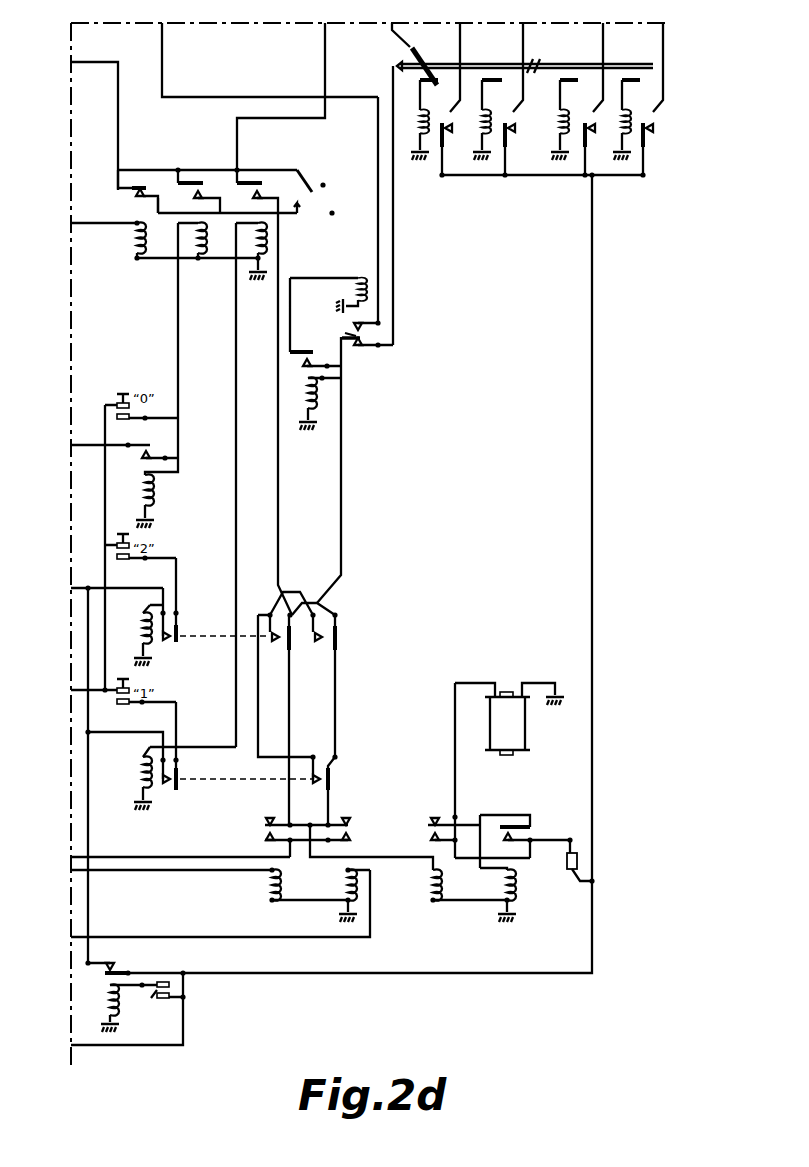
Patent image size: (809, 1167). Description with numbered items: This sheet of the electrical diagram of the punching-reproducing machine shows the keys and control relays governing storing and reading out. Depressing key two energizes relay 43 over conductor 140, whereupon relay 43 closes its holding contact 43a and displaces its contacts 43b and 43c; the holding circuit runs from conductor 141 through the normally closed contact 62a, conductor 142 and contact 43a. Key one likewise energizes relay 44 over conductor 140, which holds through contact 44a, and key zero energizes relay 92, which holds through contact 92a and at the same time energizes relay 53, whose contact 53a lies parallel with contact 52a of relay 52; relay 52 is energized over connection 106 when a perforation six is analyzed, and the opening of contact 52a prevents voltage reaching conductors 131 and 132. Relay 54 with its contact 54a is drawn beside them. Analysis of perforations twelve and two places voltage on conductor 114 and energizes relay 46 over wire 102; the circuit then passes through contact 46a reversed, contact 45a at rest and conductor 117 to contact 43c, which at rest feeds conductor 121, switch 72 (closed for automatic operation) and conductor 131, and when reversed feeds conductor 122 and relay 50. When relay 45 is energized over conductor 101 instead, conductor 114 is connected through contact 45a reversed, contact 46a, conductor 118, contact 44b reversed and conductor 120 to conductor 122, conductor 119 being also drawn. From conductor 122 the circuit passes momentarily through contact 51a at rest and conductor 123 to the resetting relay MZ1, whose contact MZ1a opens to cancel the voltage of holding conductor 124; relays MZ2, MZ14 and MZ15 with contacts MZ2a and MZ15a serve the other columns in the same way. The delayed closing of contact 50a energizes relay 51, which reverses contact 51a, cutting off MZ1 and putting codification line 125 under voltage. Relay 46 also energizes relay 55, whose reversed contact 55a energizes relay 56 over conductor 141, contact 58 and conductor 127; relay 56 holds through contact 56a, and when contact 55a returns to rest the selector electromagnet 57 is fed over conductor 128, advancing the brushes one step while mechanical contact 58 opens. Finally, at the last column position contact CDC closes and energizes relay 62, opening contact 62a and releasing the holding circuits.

The conductor 131 is at (325, 57).
The conductor 132 is at (118, 118).
The codification line 125 is at (378, 234).
The conductor 123 is at (399, 254).
The holding conductor 124 is at (458, 45).
The resetting relay MZ1 is at (435, 91).
The resetting relay contact MZ1a is at (449, 142).
The resetting relay MZ2 is at (498, 91).
The resetting relay contact MZ2a is at (512, 132).
The resetting relay MZ14 is at (577, 99).
The resetting relay MZ15 is at (638, 91).
The resetting relay contact MZ15a is at (652, 134).
The conductor 141 is at (592, 375).
The switch 72 is at (305, 180).
The relay contact 52a is at (150, 185).
The relay contact 53a is at (203, 181).
The relay contact 54a is at (260, 181).
The connection 106 is at (92, 222).
The relay 52 is at (132, 243).
The relay 53 is at (206, 243).
The relay coil 54 is at (270, 243).
The relay 51 is at (367, 273).
The relay contact 51a is at (347, 332).
The relay contact 50a is at (315, 358).
The relay 50 is at (318, 401).
The conductor 122 is at (341, 501).
The conductor 121 is at (278, 501).
The relay contact 92a is at (152, 451).
The relay 92 is at (153, 492).
The conductor 140 is at (105, 579).
The relay 43 is at (138, 630).
The holding contact 43a is at (176, 644).
The conductor 142 is at (89, 838).
The relay 44 is at (138, 775).
The holding contact 44a is at (176, 791).
The relay contact 43b is at (280, 648).
The relay contact 43c is at (320, 646).
The conductor 117 is at (289, 802).
The conductor 119 is at (338, 706).
The conductor 118 is at (329, 803).
The conductor 120 is at (259, 727).
The relay contact 44b is at (327, 763).
The relay contact 45a is at (265, 827).
The relay contact 46a is at (349, 827).
The conductor 114 is at (201, 857).
The conductor 101 is at (203, 872).
The relay 45 is at (266, 893).
The relay 46 is at (342, 885).
The wire 102 is at (370, 930).
The relay 55 is at (428, 885).
The relay 56 is at (502, 885).
The relay contact 55a is at (432, 820).
The conductor 128 is at (457, 780).
The selector electromagnet 57 is at (530, 733).
The holding contact 56a is at (518, 835).
The conductor 127 is at (547, 841).
The mechanical contact 58 is at (574, 872).
The relay contact 62a is at (118, 966).
The relay 62 is at (104, 1000).
The last column contact CDC is at (164, 1001).